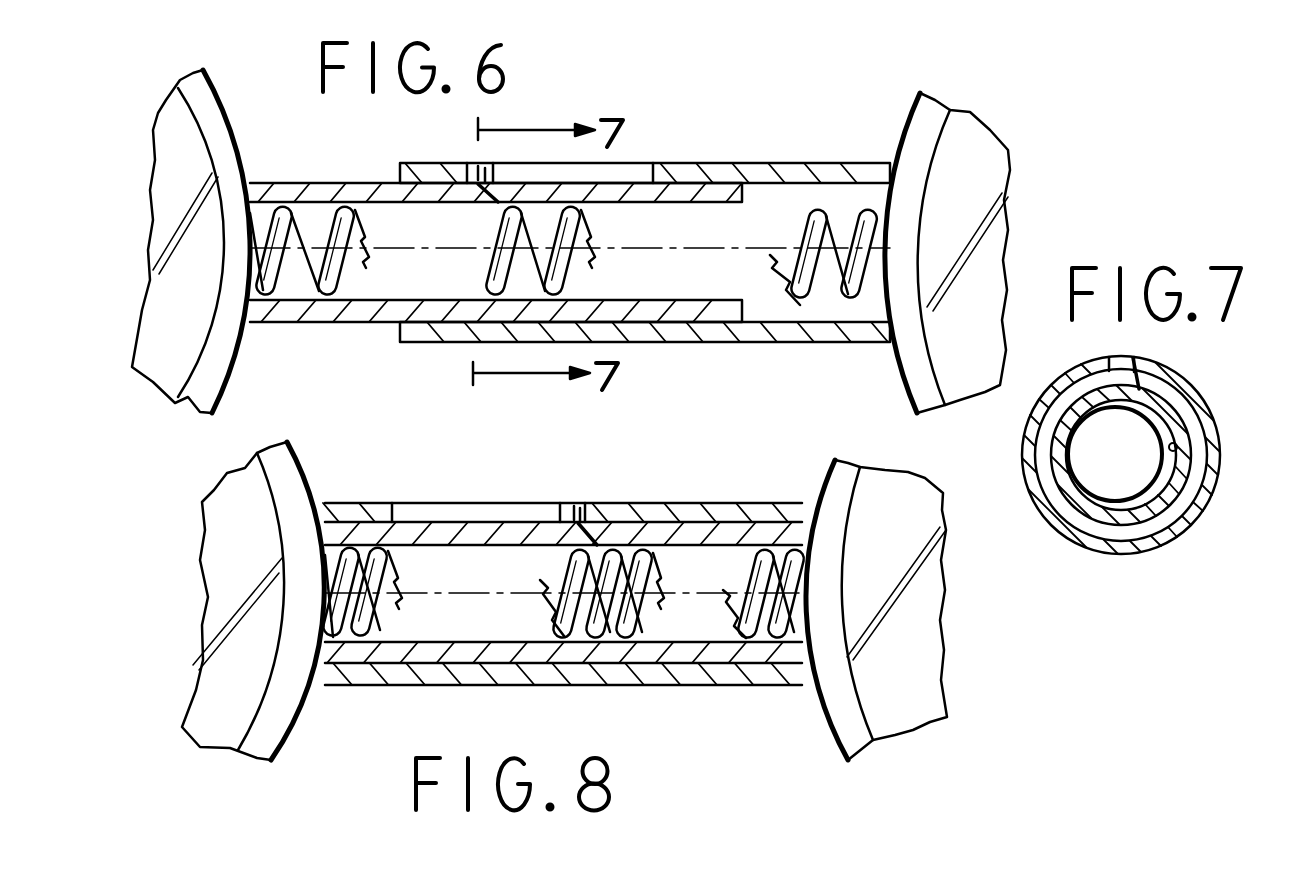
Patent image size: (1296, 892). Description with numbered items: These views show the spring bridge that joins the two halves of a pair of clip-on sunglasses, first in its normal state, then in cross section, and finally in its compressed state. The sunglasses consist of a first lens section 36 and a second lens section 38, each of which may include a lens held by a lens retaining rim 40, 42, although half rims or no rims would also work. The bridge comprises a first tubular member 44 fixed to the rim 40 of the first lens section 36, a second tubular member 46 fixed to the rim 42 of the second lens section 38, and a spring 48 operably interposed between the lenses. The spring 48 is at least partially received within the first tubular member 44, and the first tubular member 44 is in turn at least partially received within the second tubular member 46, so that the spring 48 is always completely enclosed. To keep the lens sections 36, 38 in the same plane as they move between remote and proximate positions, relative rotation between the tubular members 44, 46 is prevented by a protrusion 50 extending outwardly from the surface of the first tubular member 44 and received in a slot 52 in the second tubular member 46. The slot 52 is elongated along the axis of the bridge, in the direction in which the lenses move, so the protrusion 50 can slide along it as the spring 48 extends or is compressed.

In FIG. 6, the first lens section 36 is at (153, 232).
In FIG. 8, the first lens section 36 is at (190, 601).
In FIG. 8, the second lens section 38 is at (937, 610).
In FIG. 6, the lens retaining rim 40 is at (232, 218).
In FIG. 8, the lens retaining rim 40 is at (249, 627).
In FIG. 8, the lens retaining rim 42 is at (802, 583).
In FIG. 6, the first tubular member 44 is at (496, 214).
In FIG. 7, the first tubular member 44 is at (1151, 490).
In FIG. 8, the first tubular member 44 is at (562, 629).
In FIG. 6, the second tubular member 46 is at (645, 207).
In FIG. 7, the second tubular member 46 is at (1157, 455).
In FIG. 8, the second tubular member 46 is at (563, 632).
In FIG. 6, the spring 48 is at (564, 213).
In FIG. 7, the spring 48 is at (1093, 502).
In FIG. 8, the spring 48 is at (563, 533).
In FIG. 6, the protrusion 50 is at (440, 159).
In FIG. 7, the protrusion 50 is at (1196, 362).
In FIG. 8, the protrusion 50 is at (561, 494).
In FIG. 6, the slot 52 is at (606, 120).
In FIG. 7, the slot 52 is at (1077, 343).
In FIG. 8, the slot 52 is at (457, 472).